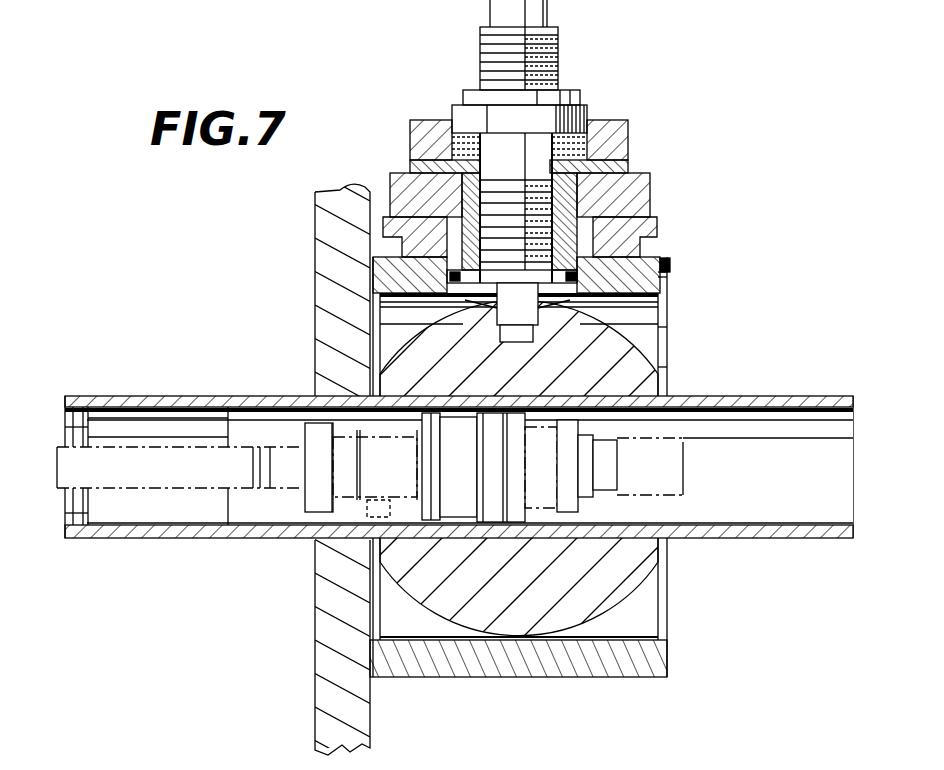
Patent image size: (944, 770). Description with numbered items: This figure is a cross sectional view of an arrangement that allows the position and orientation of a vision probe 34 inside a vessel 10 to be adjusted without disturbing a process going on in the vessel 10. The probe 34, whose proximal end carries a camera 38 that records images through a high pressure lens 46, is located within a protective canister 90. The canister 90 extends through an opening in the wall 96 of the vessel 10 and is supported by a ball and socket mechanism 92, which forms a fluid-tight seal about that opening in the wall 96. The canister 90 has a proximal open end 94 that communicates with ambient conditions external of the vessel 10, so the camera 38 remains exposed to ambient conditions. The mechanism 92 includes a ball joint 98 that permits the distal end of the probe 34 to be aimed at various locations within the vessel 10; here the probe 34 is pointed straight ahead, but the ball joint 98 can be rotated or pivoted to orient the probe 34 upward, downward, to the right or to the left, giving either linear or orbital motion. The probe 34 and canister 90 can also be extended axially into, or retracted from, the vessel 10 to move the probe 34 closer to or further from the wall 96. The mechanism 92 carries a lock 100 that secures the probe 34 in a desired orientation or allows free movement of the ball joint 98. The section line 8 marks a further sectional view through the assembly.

The section line 8- 8 is at (577, 250).
The vessel 10 is at (320, 253).
The vision probe 34 is at (683, 475).
The camera 38 is at (683, 452).
The high pressure lens 46 is at (57, 467).
The canister 90 is at (790, 535).
The ball and socket mechanism 92 is at (672, 263).
The proximal open end 94 is at (853, 500).
The wall 96 is at (363, 707).
The ball joint 98 is at (632, 367).
The lock 100 is at (557, 72).